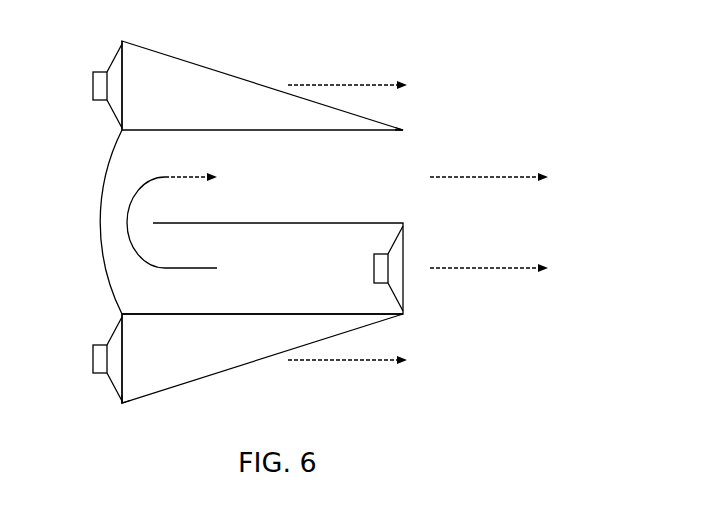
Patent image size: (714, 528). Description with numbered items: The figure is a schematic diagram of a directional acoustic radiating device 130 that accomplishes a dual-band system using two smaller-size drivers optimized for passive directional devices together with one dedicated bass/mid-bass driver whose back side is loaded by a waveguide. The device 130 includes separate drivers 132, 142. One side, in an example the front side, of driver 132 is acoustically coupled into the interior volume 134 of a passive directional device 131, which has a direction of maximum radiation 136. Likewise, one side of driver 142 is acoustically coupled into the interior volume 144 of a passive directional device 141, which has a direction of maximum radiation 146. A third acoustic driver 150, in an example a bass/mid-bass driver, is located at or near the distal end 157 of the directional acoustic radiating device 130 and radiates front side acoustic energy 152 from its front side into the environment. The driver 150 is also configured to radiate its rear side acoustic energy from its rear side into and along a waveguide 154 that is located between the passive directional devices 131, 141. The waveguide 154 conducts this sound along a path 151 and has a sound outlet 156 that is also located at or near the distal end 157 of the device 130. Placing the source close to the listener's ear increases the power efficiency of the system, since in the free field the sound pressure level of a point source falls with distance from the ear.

The directional acoustic radiating device 130 is at (107, 408).
The passive directional device 131 is at (237, 375).
The driver 132 is at (115, 380).
The interior volume 134 is at (165, 385).
The direction of maximum radiation 136 is at (363, 360).
The passive directional device 141 is at (217, 63).
The driver 142 is at (113, 65).
The interior volume 144 is at (133, 62).
The direction of maximum radiation 146 is at (370, 86).
The third acoustic driver 150 is at (397, 248).
The path 151 is at (130, 203).
The front side acoustic energy 152 is at (490, 268).
The waveguide 154 is at (113, 235).
The sound outlet 156 is at (492, 177).
The distal end 157 is at (406, 114).